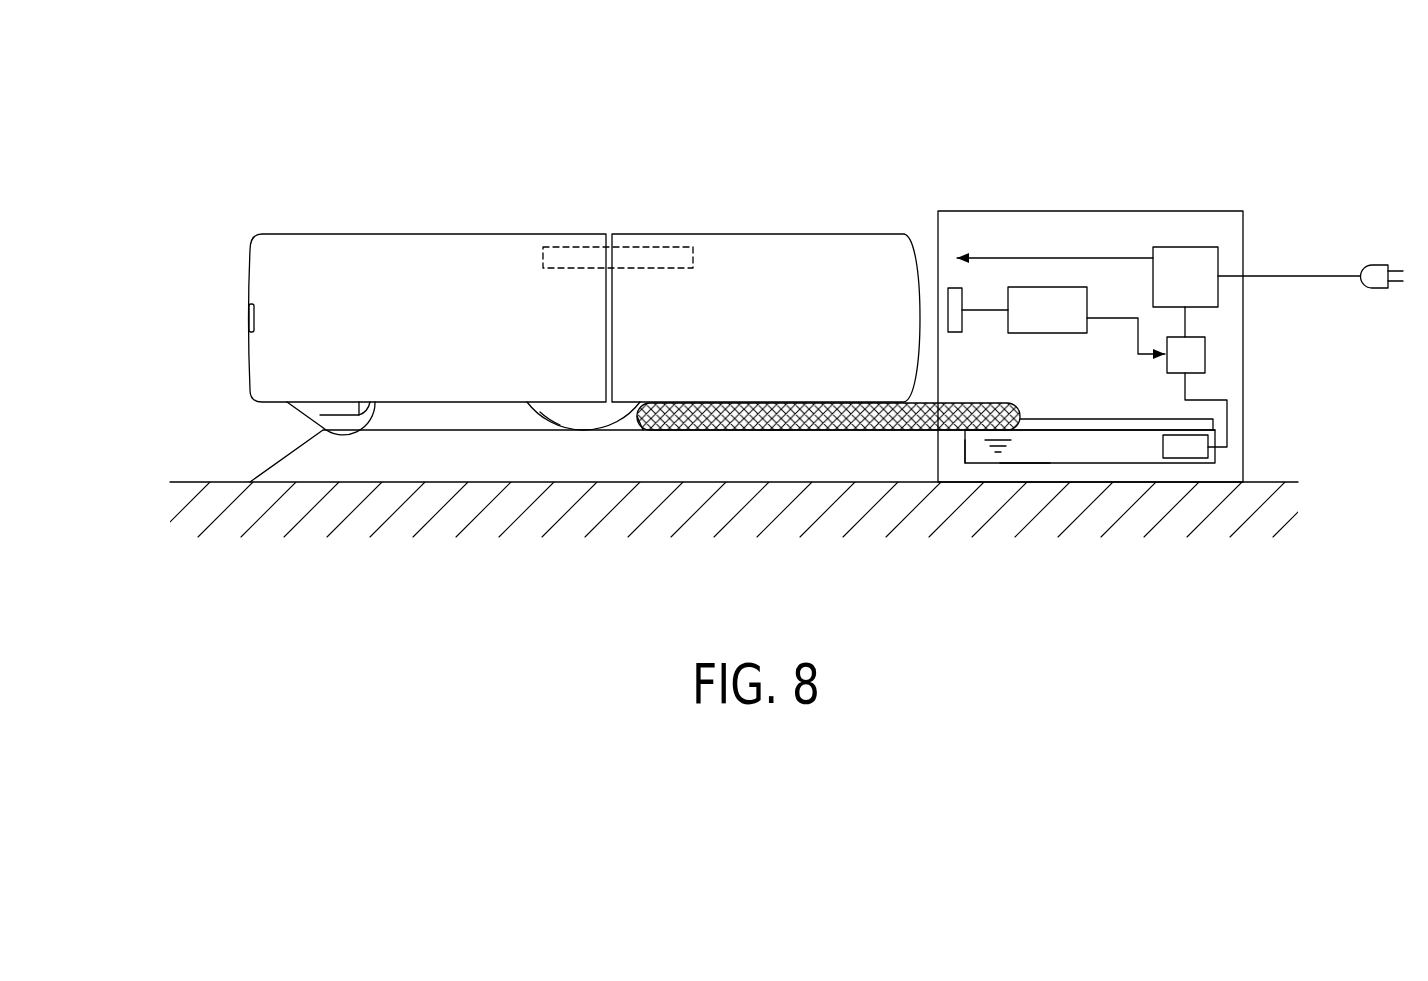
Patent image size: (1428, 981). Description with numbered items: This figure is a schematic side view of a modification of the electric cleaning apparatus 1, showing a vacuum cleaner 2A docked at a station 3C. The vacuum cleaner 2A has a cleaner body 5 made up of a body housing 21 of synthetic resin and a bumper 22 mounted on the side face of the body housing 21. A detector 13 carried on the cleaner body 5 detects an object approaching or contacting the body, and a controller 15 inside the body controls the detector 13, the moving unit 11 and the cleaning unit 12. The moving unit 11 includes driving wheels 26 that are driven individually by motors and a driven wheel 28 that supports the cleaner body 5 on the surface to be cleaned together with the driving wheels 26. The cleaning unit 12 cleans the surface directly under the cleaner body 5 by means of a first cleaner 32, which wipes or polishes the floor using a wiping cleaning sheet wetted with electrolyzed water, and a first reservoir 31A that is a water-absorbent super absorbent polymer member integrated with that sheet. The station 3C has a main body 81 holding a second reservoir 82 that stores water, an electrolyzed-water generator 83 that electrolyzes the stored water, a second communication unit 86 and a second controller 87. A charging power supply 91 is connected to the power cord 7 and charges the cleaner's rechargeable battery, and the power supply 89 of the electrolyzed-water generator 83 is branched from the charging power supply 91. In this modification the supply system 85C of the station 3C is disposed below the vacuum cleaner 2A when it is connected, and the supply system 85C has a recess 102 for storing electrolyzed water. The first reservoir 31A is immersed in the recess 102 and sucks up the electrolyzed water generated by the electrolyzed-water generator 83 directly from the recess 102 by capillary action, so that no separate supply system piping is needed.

The electric cleaning apparatus 1 is at (889, 106).
The vacuum cleaner 2A is at (584, 210).
The station 3C is at (997, 211).
The cleaner body 5 is at (771, 230).
The power cord 7 is at (1330, 278).
The moving unit 11 is at (541, 421).
The cleaning unit 12 is at (767, 434).
The detector 13 is at (250, 317).
The controller 15 is at (660, 247).
The body housing 21 is at (738, 245).
The bumper 22 is at (465, 260).
The driving wheels 26 is at (592, 423).
The driven wheel 28 is at (347, 431).
The first reservoir 31A is at (655, 431).
The first cleaner 32 is at (735, 431).
The main body 81 is at (1243, 230).
The second reservoir 82 is at (1092, 464).
The electrolyzed-water generator 83 is at (1182, 459).
The supply system 85C is at (1025, 466).
The second communication unit 86 is at (953, 333).
The second controller 87 is at (1057, 334).
The power supply 89 is at (1205, 351).
The charging power supply 91 is at (1218, 296).
The recess 102 is at (963, 449).